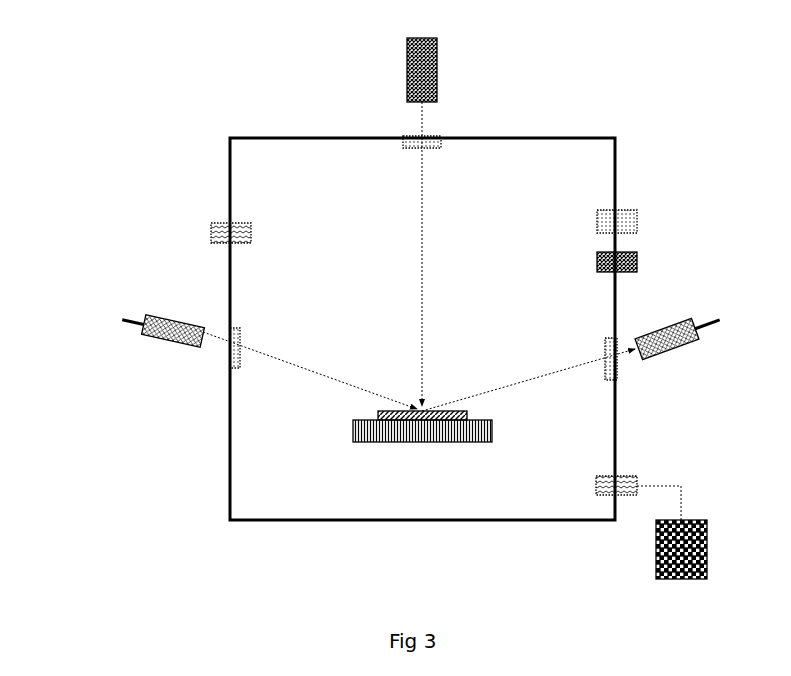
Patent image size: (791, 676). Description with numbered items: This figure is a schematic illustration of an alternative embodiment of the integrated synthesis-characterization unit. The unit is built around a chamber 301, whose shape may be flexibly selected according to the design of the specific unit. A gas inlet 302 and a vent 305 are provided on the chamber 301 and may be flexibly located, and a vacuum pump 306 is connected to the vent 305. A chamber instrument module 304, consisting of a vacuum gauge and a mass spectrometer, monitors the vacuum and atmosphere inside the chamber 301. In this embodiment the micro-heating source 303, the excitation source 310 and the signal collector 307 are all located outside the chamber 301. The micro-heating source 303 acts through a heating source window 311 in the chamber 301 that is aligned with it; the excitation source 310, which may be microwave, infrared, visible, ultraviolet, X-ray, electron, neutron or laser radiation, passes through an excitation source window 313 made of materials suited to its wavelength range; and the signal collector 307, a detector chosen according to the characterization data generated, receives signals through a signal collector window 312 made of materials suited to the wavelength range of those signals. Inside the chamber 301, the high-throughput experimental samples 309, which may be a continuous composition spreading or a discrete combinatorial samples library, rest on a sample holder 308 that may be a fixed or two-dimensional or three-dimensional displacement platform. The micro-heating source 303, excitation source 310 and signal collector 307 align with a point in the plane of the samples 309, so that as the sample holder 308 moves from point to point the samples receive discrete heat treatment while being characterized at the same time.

The chamber 301 is at (230, 262).
The gas inlet 302 is at (211, 238).
The micro-heating source 303 is at (406, 94).
The chamber instrument module 304 is at (637, 272).
The vent 305 is at (627, 477).
The vacuum pump 306 is at (693, 520).
The signal collector 307 is at (677, 352).
The sample holder 308 is at (392, 448).
The high-throughput experimental samples 309 is at (378, 418).
The excitation source 310 is at (170, 344).
The heating source window 311 is at (434, 135).
The signal collector window 312 is at (616, 338).
The excitation source window 313 is at (230, 358).